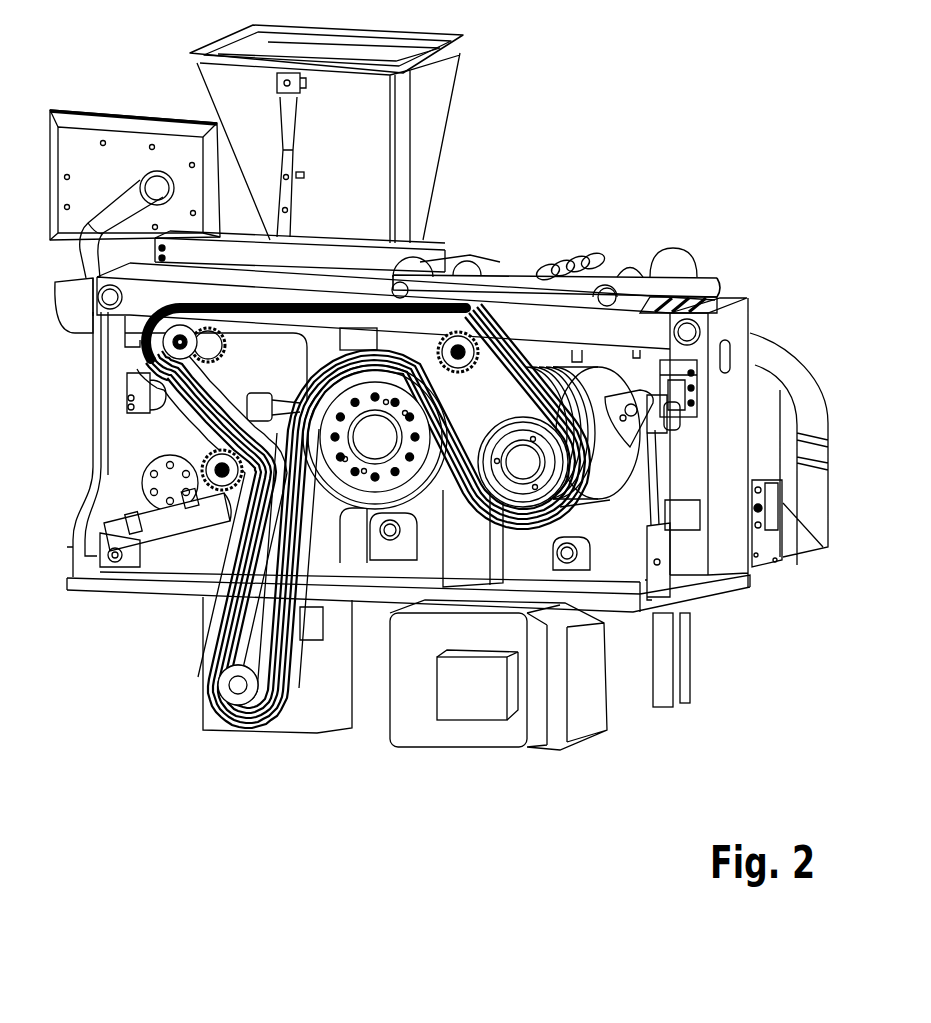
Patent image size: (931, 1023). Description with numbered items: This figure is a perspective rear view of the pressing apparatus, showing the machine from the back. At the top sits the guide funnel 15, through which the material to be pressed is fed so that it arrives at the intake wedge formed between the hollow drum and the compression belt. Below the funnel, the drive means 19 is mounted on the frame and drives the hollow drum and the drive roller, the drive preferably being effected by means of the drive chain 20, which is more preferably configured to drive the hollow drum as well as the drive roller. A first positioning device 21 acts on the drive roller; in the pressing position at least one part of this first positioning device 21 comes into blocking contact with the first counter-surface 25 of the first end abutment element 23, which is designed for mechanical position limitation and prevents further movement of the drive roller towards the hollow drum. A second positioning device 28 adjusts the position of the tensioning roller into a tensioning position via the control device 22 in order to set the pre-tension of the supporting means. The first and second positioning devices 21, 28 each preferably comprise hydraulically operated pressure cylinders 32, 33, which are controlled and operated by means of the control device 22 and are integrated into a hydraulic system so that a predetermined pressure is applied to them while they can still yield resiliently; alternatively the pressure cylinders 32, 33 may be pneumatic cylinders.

The guide funnel 15 is at (437, 72).
The drive means 19 is at (555, 707).
The drive chain 20 is at (533, 342).
The first positioning device 21 is at (693, 503).
The control device 22 is at (78, 147).
The first end abutment element 23 is at (697, 394).
The first counter-surface 25 is at (680, 420).
The second positioning device 28 is at (208, 537).
The pressure cylinder 32 is at (657, 557).
The pressure cylinder 33 is at (167, 533).